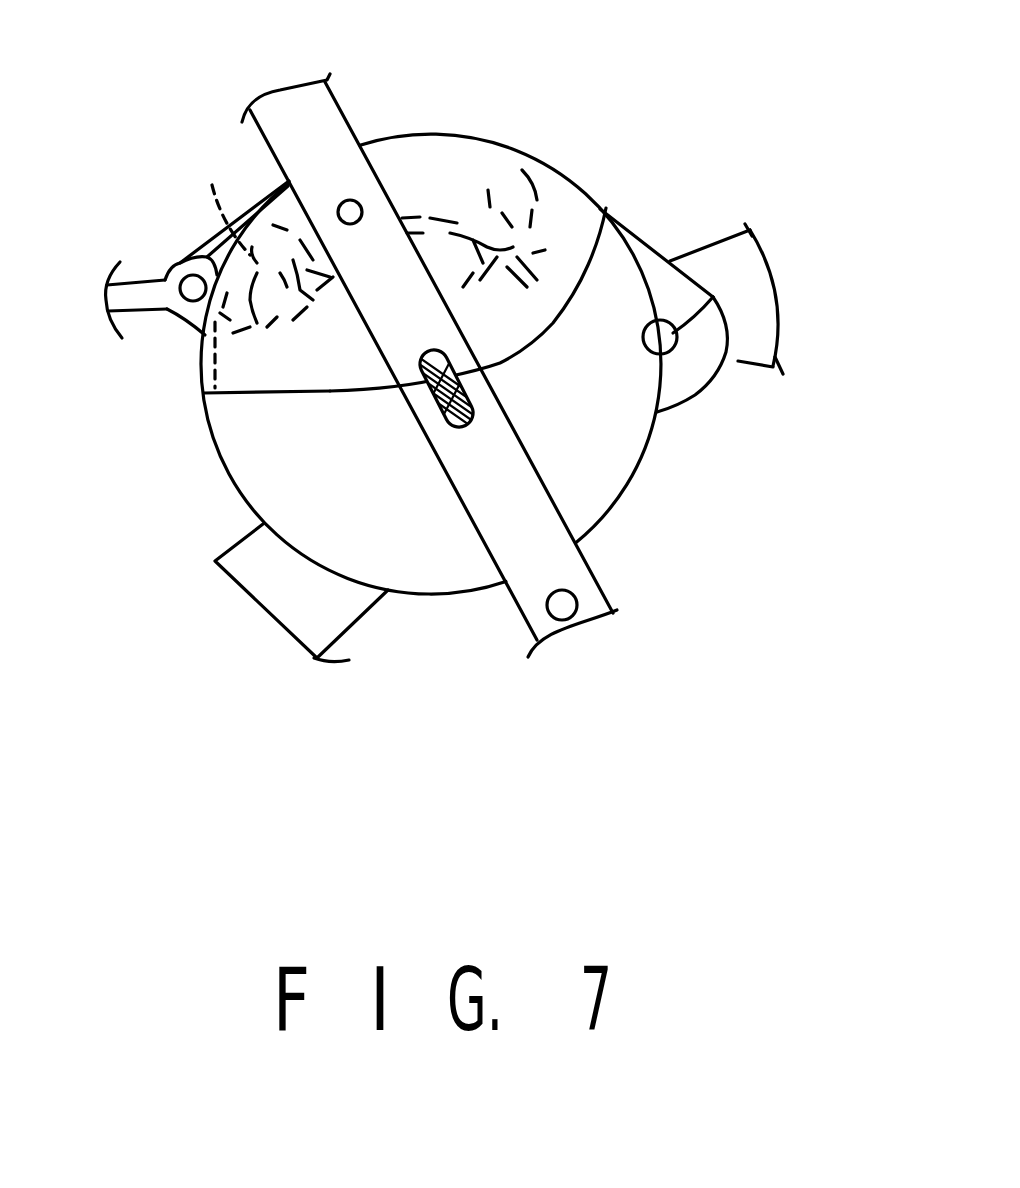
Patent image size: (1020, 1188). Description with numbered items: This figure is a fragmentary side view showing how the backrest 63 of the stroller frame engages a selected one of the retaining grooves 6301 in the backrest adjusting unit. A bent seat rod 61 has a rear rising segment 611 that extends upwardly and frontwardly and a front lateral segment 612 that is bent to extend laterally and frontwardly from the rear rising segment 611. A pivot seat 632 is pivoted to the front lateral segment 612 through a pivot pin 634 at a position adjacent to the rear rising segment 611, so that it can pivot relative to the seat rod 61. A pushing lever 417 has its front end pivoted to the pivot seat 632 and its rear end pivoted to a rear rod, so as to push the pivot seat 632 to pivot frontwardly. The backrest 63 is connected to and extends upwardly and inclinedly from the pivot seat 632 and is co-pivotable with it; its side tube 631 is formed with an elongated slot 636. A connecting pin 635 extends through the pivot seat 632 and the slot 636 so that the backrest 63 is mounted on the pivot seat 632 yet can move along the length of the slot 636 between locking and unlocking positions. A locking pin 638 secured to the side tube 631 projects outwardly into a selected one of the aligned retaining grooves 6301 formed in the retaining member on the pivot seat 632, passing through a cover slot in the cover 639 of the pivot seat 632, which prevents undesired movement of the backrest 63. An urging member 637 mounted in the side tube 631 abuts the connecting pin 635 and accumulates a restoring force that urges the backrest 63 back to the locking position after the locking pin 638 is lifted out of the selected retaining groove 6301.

The seat rod 61 is at (253, 548).
The rear rising segment 611 is at (305, 600).
The front lateral segment 612 is at (742, 354).
The pushing lever 417 is at (131, 292).
The backrest 63 is at (408, 277).
The retaining groove 6301 is at (230, 198).
The side tube 631 is at (532, 572).
The pivot seat 632 is at (657, 472).
The pivot pin 634 is at (713, 297).
The connecting pin 635 is at (600, 207).
The elongated slot 636 is at (203, 395).
The urging member 637 is at (457, 407).
The locking pin 638 is at (361, 212).
The cover 639 is at (613, 507).